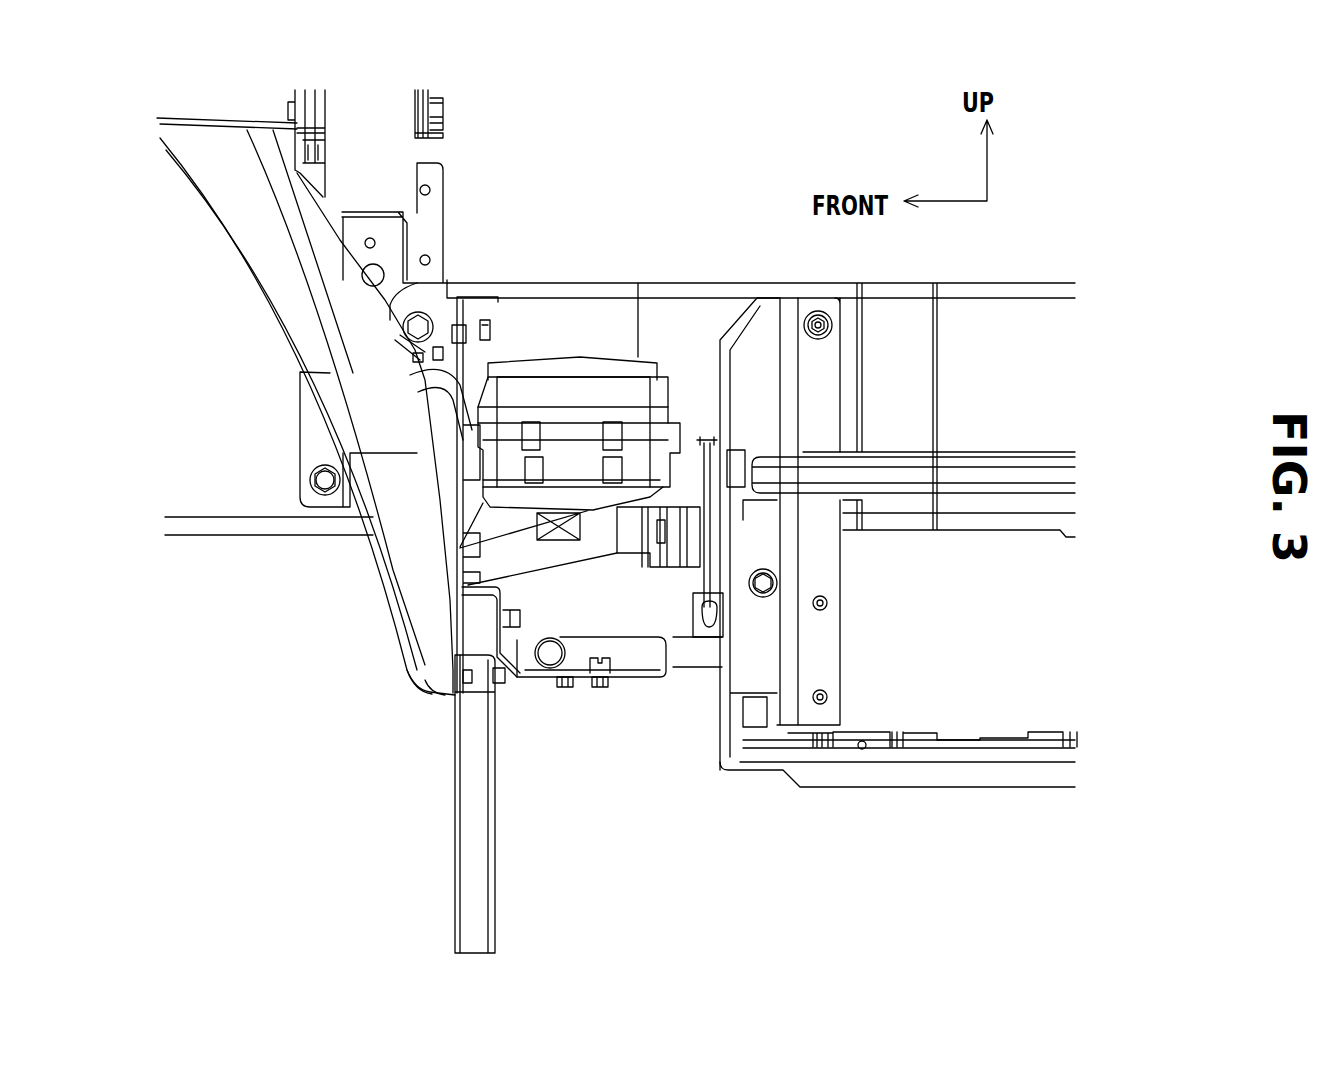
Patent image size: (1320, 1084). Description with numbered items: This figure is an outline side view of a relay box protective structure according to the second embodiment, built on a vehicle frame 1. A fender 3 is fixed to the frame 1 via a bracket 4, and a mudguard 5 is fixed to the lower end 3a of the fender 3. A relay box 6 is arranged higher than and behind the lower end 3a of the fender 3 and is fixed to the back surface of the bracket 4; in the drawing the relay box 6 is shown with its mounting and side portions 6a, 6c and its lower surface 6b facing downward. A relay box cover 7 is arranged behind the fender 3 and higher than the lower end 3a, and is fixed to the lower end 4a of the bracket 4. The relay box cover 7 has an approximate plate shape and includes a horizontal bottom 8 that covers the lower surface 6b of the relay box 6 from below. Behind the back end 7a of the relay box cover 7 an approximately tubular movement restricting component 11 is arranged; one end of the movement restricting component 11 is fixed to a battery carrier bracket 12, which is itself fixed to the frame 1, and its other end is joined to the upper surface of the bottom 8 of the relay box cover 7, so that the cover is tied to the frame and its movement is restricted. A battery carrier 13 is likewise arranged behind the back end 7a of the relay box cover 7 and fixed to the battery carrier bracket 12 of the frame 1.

The vehicle frame 1 is at (1028, 342).
The fender 3 is at (415, 570).
The lower end of the fender 3a is at (432, 697).
The bracket 4 is at (473, 420).
The lower end of the bracket 4a is at (478, 630).
The mudguard 5 is at (480, 900).
The relay box 6 is at (595, 355).
The mounting portion of control unit 6a is at (462, 425).
The lower surface of the relay box 6b is at (480, 510).
The connector portion of control unit 6c is at (672, 375).
The relay box cover 7 is at (634, 690).
The back end of the relay box cover 7a is at (690, 680).
The horizontal bottom 8 is at (640, 677).
The movement restricting component 11 is at (580, 657).
The battery carrier bracket 12 is at (830, 633).
The battery carrier 13 is at (937, 787).